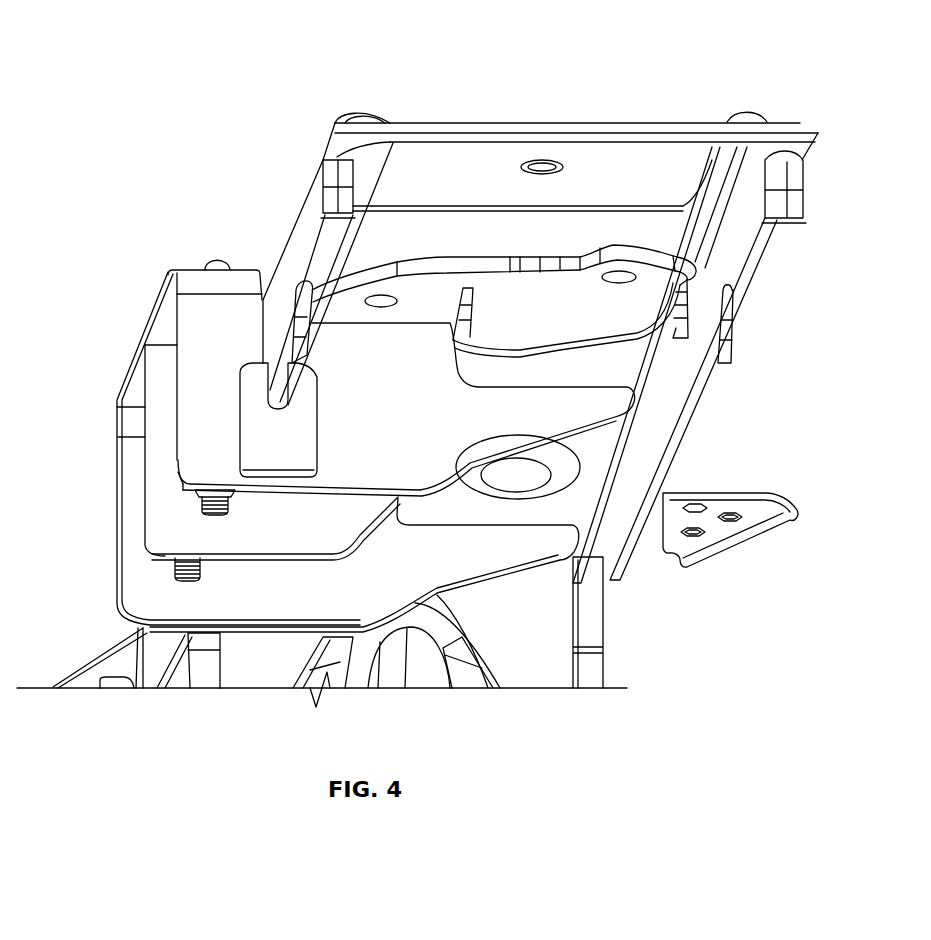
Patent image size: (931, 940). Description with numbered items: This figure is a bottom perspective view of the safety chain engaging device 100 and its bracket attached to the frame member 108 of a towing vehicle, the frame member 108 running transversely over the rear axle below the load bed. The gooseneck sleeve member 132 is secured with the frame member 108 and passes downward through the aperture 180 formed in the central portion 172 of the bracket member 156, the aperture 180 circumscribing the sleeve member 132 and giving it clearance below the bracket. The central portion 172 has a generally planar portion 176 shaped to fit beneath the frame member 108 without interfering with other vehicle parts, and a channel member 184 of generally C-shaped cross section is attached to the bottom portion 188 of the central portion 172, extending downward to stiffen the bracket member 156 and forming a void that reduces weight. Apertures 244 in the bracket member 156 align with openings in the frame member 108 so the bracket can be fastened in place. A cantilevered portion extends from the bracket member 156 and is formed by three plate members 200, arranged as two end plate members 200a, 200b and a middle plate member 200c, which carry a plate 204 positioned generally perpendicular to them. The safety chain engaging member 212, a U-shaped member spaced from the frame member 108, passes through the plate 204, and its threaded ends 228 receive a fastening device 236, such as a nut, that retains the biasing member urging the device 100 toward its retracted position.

The safety chain engaging device 100 is at (128, 31).
The frame member 108 is at (438, 134).
The gooseneck sleeve member 132 is at (570, 455).
The bracket member 156 is at (692, 285).
The central portion 172 is at (503, 307).
The generally planar portion 176 is at (558, 290).
The aperture 180 is at (517, 484).
The channel member 184 is at (645, 318).
The bottom portion 188 is at (648, 281).
The plate member 200 is at (353, 420).
The end plate member 200a is at (197, 448).
The end plate member 200b is at (150, 489).
The middle plate member 200c is at (155, 442).
The plate 204 is at (165, 283).
The safety chain engaging member 212 is at (218, 258).
The threaded end 228 is at (213, 515).
The fastening device 236 is at (183, 487).
The aperture 244 is at (378, 308).